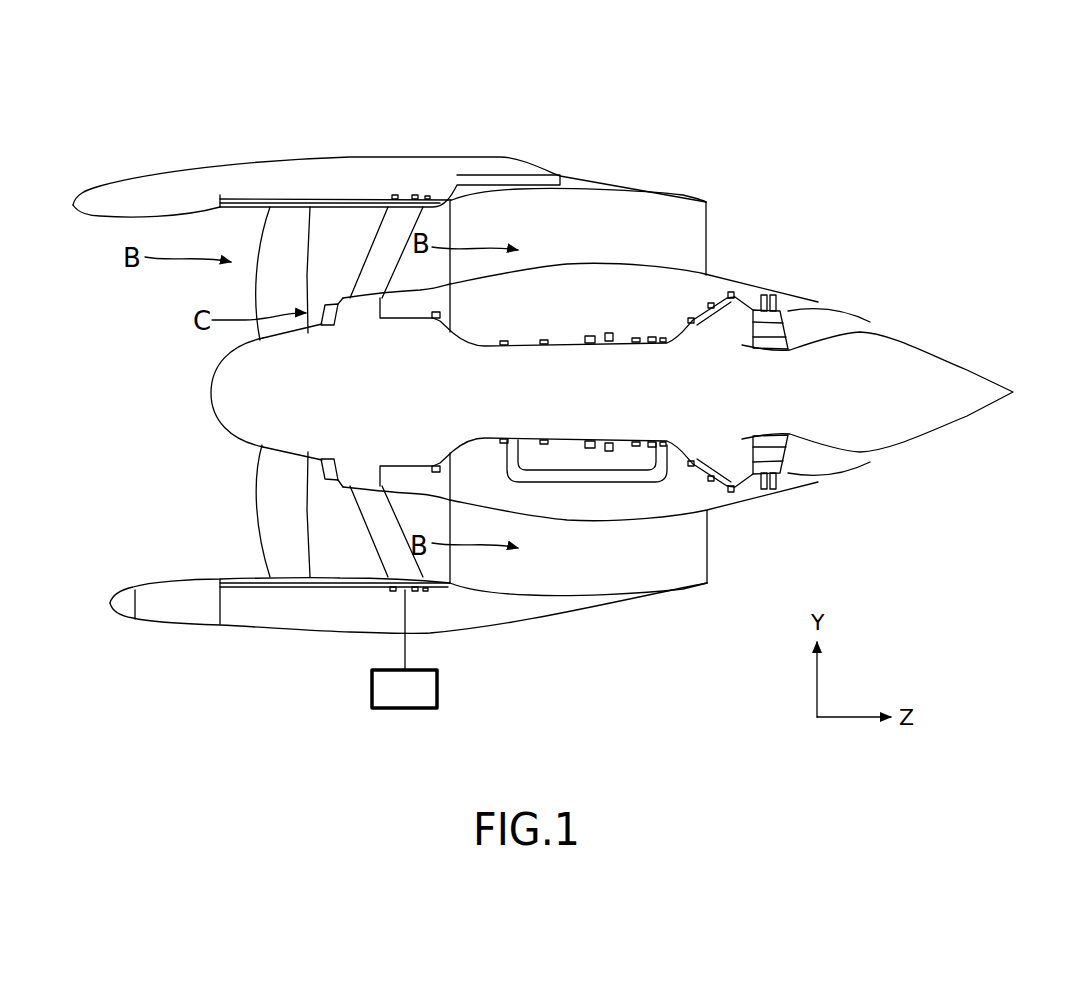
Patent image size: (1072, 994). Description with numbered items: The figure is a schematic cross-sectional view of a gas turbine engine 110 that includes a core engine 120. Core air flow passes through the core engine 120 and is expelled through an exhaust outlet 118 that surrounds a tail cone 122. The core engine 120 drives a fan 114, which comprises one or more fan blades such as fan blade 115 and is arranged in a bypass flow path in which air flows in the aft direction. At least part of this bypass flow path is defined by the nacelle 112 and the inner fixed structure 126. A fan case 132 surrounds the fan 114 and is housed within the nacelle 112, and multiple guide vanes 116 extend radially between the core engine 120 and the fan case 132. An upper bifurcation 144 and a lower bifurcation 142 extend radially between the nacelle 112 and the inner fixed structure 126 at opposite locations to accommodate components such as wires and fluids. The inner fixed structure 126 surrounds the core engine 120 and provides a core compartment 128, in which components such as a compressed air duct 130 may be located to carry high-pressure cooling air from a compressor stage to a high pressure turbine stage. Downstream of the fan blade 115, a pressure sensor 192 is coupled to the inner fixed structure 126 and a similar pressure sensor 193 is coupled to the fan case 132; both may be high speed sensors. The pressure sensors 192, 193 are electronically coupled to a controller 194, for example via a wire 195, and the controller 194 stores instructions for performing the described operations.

The gas turbine engine 110 is at (712, 116).
The nacelle 112 is at (257, 152).
The fan 114 is at (267, 505).
The fan blade 115 is at (265, 543).
The guide vanes 116 is at (382, 257).
The exhaust outlet 118 is at (863, 322).
The core engine 120 is at (592, 334).
The tail cone 122 is at (907, 427).
The inner fixed structure 126 is at (586, 262).
The core compartment 128 is at (606, 513).
The compressed air duct 130 is at (669, 485).
The fan case 132 is at (247, 590).
The lower bifurcation 142 is at (674, 573).
The upper bifurcation 144 is at (697, 221).
The pressure sensor 192 is at (330, 483).
The pressure sensor 193 is at (331, 577).
The controller 194 is at (372, 688).
The wire 195 is at (407, 640).